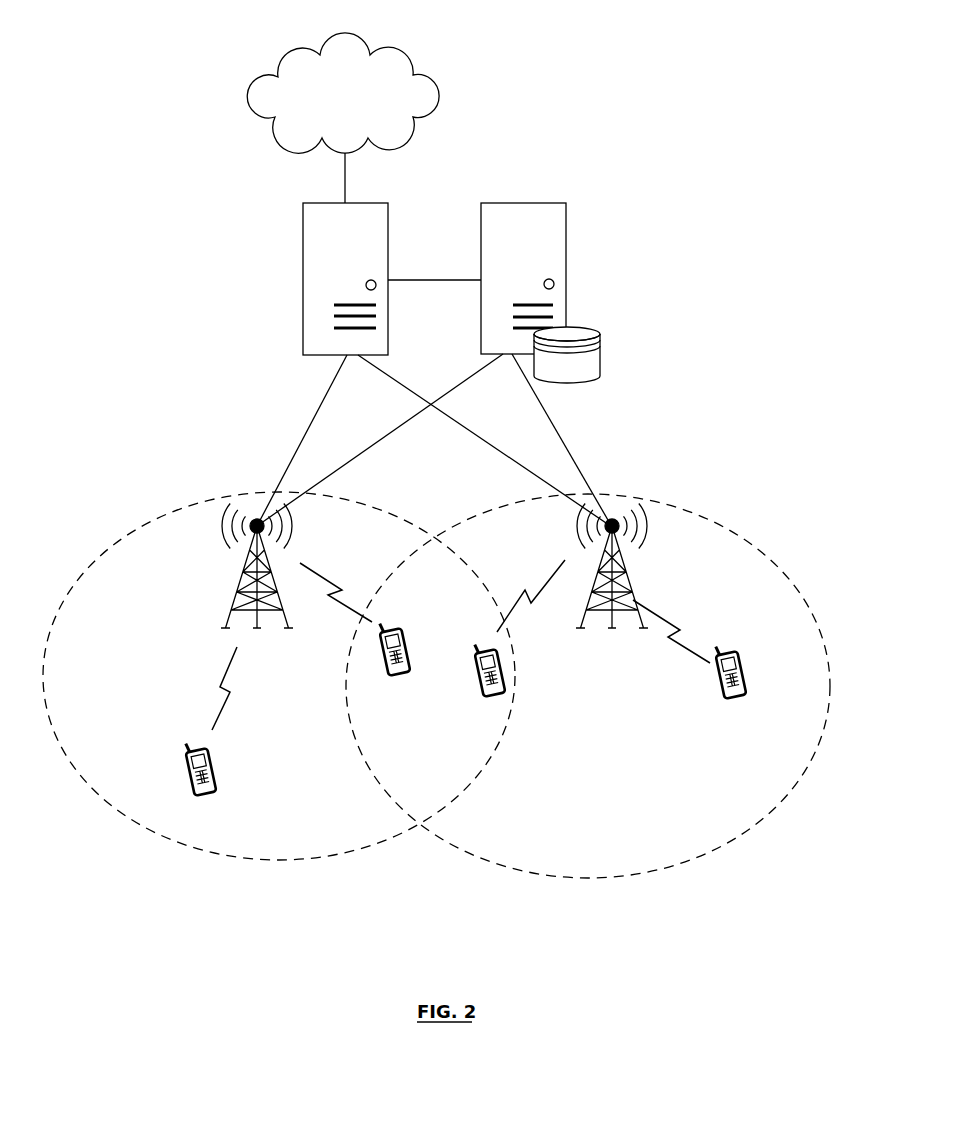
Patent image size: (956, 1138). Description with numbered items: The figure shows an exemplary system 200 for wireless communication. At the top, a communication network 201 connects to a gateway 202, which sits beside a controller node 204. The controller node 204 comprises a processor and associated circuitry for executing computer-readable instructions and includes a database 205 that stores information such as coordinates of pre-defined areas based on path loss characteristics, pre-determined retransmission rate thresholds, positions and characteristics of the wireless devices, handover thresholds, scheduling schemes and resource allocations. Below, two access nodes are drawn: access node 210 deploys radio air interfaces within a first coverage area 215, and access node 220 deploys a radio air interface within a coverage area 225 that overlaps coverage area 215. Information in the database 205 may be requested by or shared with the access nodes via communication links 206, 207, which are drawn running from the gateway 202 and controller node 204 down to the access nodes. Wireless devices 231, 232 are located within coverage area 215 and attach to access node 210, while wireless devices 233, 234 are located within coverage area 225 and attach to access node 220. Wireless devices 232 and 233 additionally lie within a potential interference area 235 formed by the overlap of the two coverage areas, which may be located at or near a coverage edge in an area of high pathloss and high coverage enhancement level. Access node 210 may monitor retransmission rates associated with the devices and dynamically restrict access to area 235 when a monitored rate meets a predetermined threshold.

The system 200 is at (530, 108).
The communication network 201 is at (329, 104).
The gateway 202 is at (303, 243).
The controller node 204 is at (566, 258).
The database 205 is at (600, 358).
The communication link 206 is at (412, 392).
The communication link 207 is at (374, 445).
The access node 210 is at (237, 597).
The coverage area 215 is at (290, 860).
The access node 220 is at (634, 602).
The coverage area 225 is at (597, 878).
The wireless device 231 is at (201, 796).
The wireless device 232 is at (387, 676).
The wireless device 233 is at (493, 697).
The wireless device 234 is at (742, 698).
The potential interference area 235 is at (432, 778).